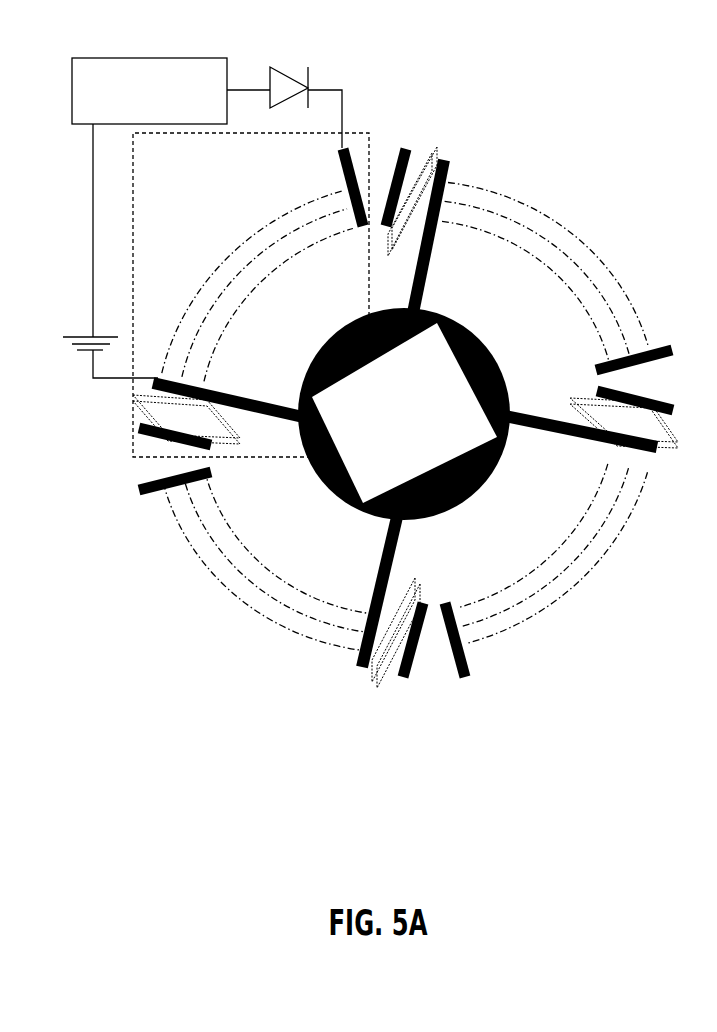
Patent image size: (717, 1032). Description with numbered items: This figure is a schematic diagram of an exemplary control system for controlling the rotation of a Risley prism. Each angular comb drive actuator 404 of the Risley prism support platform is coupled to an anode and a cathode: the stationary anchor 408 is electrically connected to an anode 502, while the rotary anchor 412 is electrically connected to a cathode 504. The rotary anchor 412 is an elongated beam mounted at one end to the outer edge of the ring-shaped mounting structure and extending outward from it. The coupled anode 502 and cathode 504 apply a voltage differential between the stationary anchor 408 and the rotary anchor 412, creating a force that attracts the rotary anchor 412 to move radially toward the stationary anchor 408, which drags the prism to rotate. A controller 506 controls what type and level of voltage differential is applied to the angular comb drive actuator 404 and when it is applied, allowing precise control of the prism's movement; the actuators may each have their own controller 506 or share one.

The angular comb drive actuator 404 is at (370, 147).
The stationary anchor 408 is at (359, 228).
The rotary anchor 412 is at (250, 405).
The anode 502 is at (308, 88).
The cathode 504 is at (83, 335).
The controller 506 is at (149, 91).